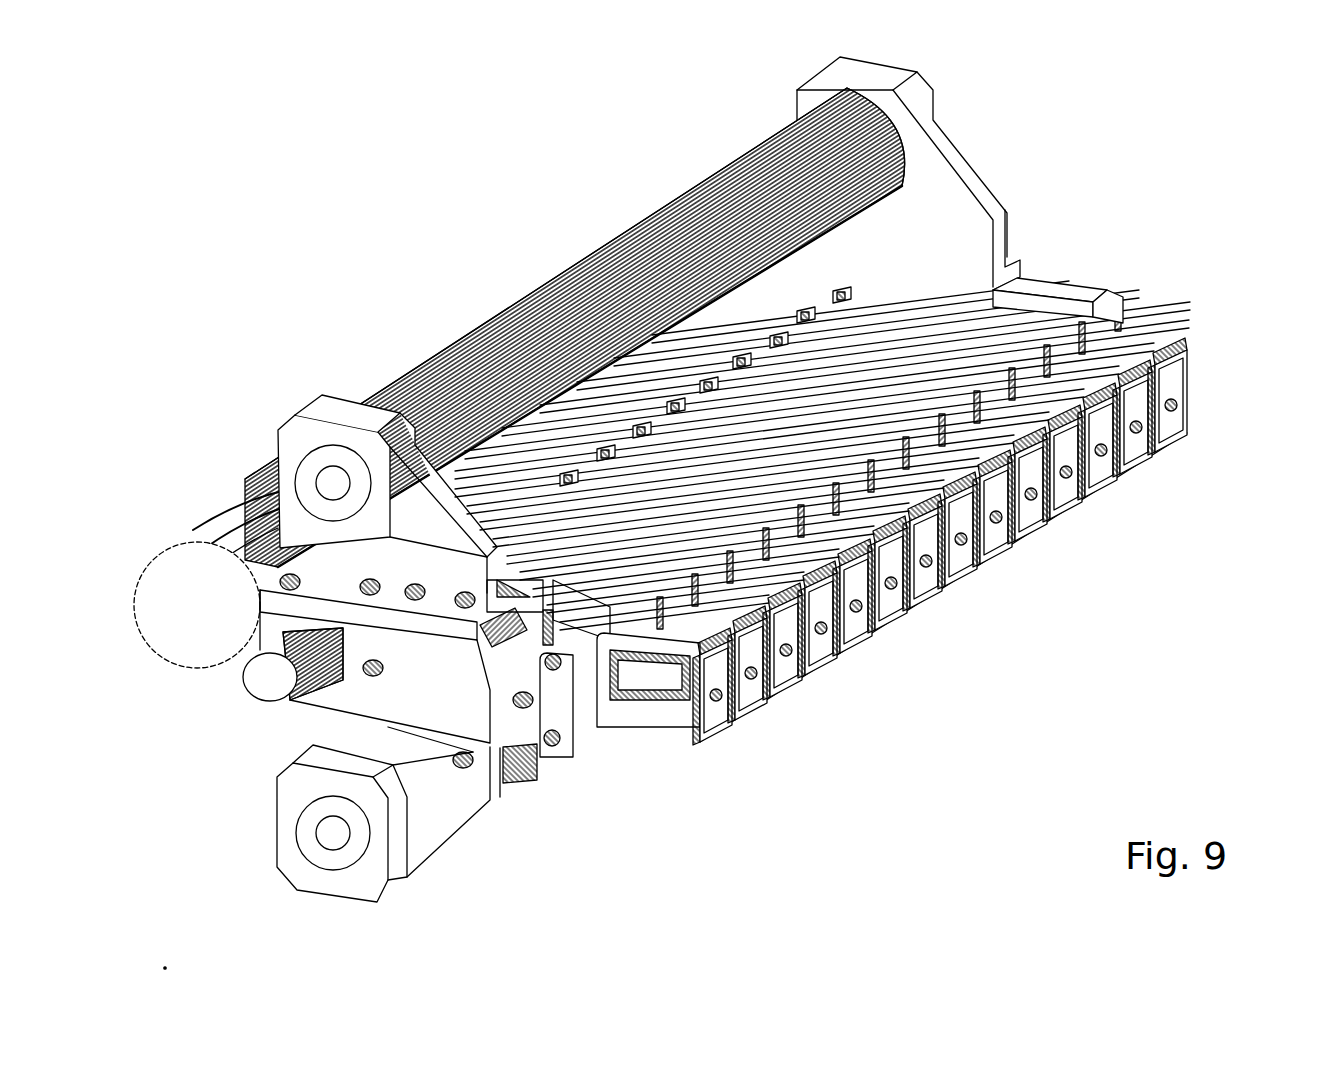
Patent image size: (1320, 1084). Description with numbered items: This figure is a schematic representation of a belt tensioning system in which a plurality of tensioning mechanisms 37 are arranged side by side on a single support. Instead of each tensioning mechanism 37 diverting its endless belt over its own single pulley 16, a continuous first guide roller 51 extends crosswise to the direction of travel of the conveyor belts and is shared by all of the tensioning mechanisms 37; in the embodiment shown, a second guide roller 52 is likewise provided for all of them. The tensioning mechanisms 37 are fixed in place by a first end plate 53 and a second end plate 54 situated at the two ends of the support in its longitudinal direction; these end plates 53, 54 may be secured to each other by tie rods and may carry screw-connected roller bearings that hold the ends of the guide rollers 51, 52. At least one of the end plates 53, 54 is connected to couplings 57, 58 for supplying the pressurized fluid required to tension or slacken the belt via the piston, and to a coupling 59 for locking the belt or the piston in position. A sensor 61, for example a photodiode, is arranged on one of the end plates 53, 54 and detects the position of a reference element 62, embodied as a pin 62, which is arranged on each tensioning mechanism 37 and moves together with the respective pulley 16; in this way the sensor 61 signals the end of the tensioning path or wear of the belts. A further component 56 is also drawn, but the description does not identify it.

The pulley 16 is at (258, 507).
The tensioning mechanism 37 is at (1140, 460).
The first guide roller 51 is at (632, 240).
The second guide roller 52 is at (522, 765).
The first end plate 53 is at (347, 700).
The second end plate 54 is at (1062, 290).
The mounting plate 56 is at (557, 670).
The coupling 57 is at (358, 666).
The coupling 58 is at (362, 592).
The coupling 59 is at (524, 708).
The sensor 61 is at (560, 668).
The reference element 62 is at (622, 616).